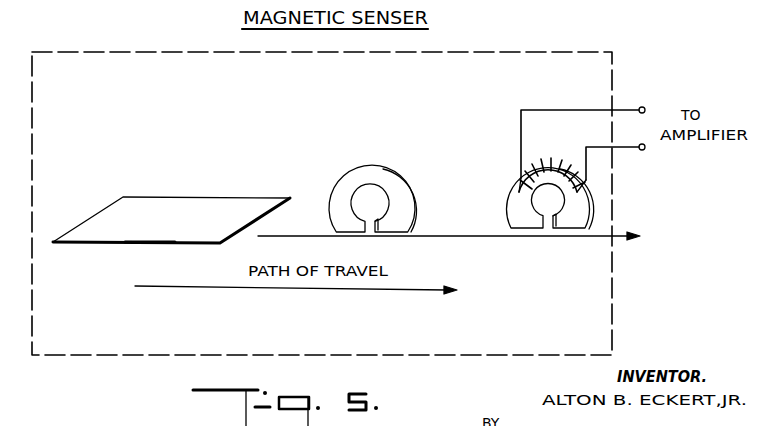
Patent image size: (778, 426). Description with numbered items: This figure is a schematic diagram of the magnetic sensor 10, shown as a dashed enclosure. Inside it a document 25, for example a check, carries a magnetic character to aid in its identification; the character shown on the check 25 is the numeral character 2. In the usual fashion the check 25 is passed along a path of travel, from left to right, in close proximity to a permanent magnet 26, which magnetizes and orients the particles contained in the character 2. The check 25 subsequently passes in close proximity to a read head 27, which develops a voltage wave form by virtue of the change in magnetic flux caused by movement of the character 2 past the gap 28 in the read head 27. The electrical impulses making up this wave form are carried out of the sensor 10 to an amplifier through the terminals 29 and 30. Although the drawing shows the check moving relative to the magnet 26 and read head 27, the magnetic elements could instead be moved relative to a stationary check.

The magnetic sensor 10 is at (613, 72).
The document 25 is at (198, 200).
The character 2 is at (150, 233).
The permanent magnet 26 is at (356, 172).
The read head 27 is at (545, 170).
The gap 28 is at (548, 230).
The terminal 29 is at (645, 150).
The terminal 30 is at (645, 107).